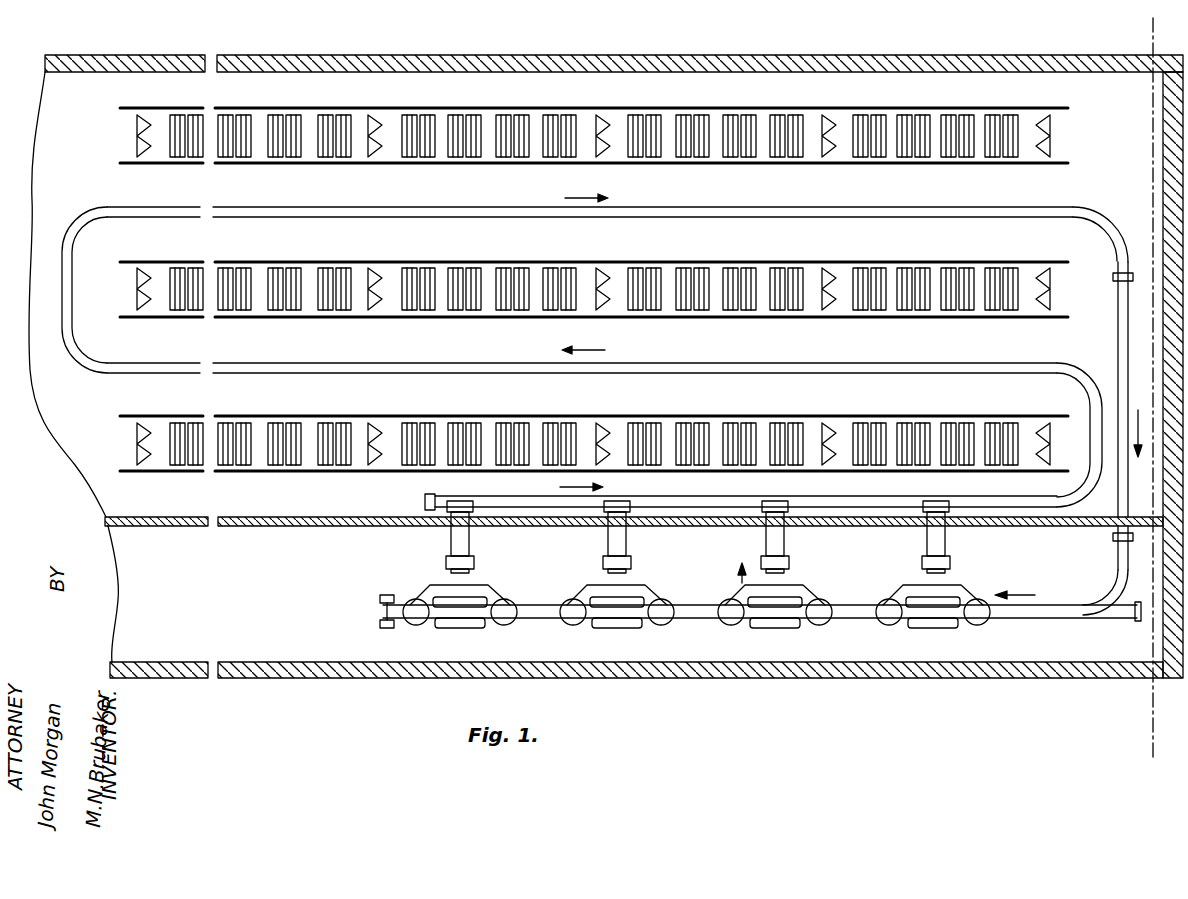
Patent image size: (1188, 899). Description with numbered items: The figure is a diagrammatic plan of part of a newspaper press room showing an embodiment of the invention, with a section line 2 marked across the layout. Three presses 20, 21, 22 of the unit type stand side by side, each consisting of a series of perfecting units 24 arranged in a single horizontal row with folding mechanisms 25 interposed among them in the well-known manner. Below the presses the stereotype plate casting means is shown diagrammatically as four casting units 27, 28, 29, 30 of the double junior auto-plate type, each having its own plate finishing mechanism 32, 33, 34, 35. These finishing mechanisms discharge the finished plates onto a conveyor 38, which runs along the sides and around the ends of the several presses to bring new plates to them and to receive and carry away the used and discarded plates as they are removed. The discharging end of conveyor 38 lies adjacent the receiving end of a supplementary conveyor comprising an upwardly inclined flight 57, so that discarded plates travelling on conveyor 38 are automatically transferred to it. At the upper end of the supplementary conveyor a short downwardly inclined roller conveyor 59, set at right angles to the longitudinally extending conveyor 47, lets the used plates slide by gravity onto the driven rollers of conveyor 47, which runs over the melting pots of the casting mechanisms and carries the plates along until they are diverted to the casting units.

The section line 2- 2 is at (1147, 31).
The press 20 is at (808, 163).
The press 21 is at (625, 318).
The press 22 is at (295, 472).
The perfecting unit 24 is at (600, 163).
The folding mechanism 25 is at (700, 157).
The plate casting unit 27 is at (477, 625).
The plate casting unit 28 is at (632, 625).
The plate casting unit 29 is at (787, 625).
The plate casting unit 30 is at (945, 625).
The plate finishing mechanism 32 is at (465, 547).
The plate finishing mechanism 33 is at (623, 547).
The plate finishing mechanism 34 is at (780, 547).
The plate finishing mechanism 35 is at (940, 547).
The conveyor 38 is at (545, 214).
The longitudinally-extending conveyor 47 is at (1018, 612).
The upwardly-inclined flight 57 is at (1126, 356).
The downwardly-inclined conveyor 59 is at (1118, 582).